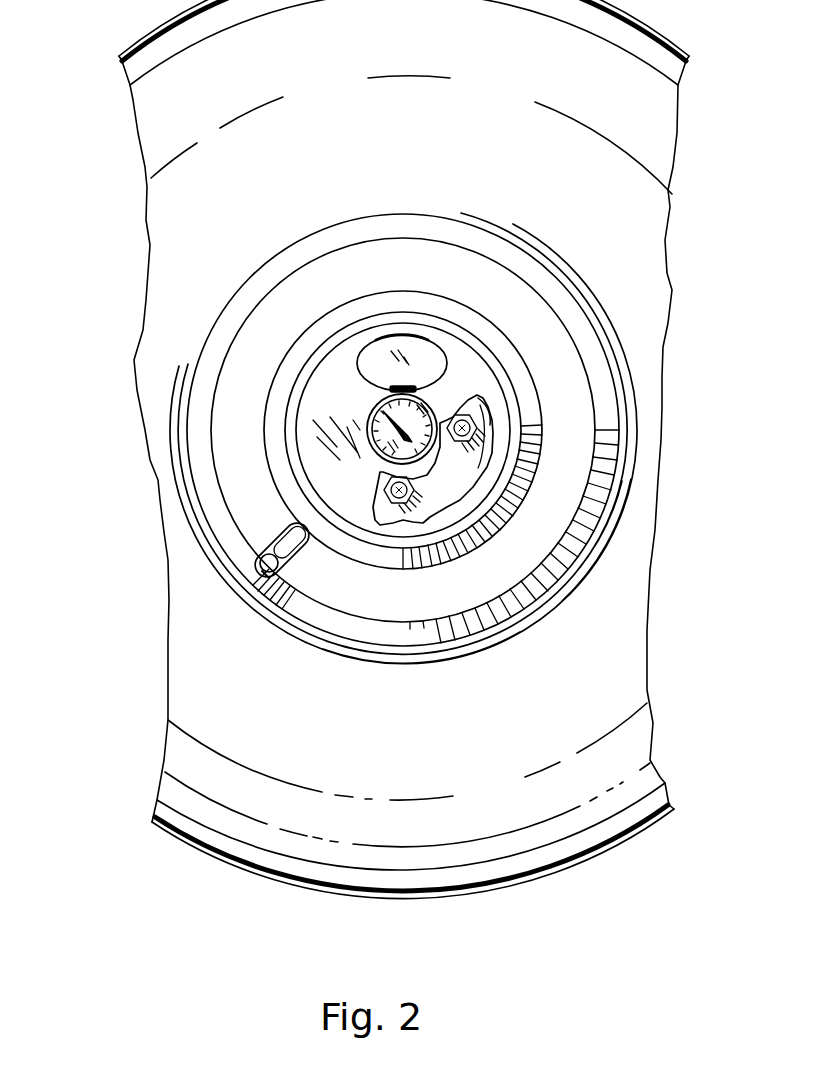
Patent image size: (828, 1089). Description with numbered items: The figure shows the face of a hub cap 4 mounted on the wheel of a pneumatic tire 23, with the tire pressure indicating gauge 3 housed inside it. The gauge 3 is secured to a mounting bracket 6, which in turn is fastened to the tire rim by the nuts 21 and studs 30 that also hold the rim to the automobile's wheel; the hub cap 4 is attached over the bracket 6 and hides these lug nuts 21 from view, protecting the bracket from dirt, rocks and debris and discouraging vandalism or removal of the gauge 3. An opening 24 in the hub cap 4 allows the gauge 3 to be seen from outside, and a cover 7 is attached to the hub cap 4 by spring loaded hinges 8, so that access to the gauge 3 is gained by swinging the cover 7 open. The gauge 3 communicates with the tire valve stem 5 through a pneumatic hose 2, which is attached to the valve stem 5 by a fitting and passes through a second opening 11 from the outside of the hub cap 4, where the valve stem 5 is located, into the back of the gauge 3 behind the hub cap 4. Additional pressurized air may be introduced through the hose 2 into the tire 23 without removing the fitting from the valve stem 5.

The pneumatic hose 2 is at (278, 533).
The pressure indicating gauge 3 is at (368, 437).
The hub cap 4 is at (573, 443).
The tire valve stem 5 is at (260, 566).
The mounting bracket 6 is at (445, 473).
The cover 7 is at (367, 371).
The spring loaded hinges 8 is at (388, 388).
The opening 11 is at (268, 553).
The nuts 21 is at (478, 428).
The tire 23 is at (632, 565).
The opening 24 is at (368, 428).
The studs 30 is at (483, 418).